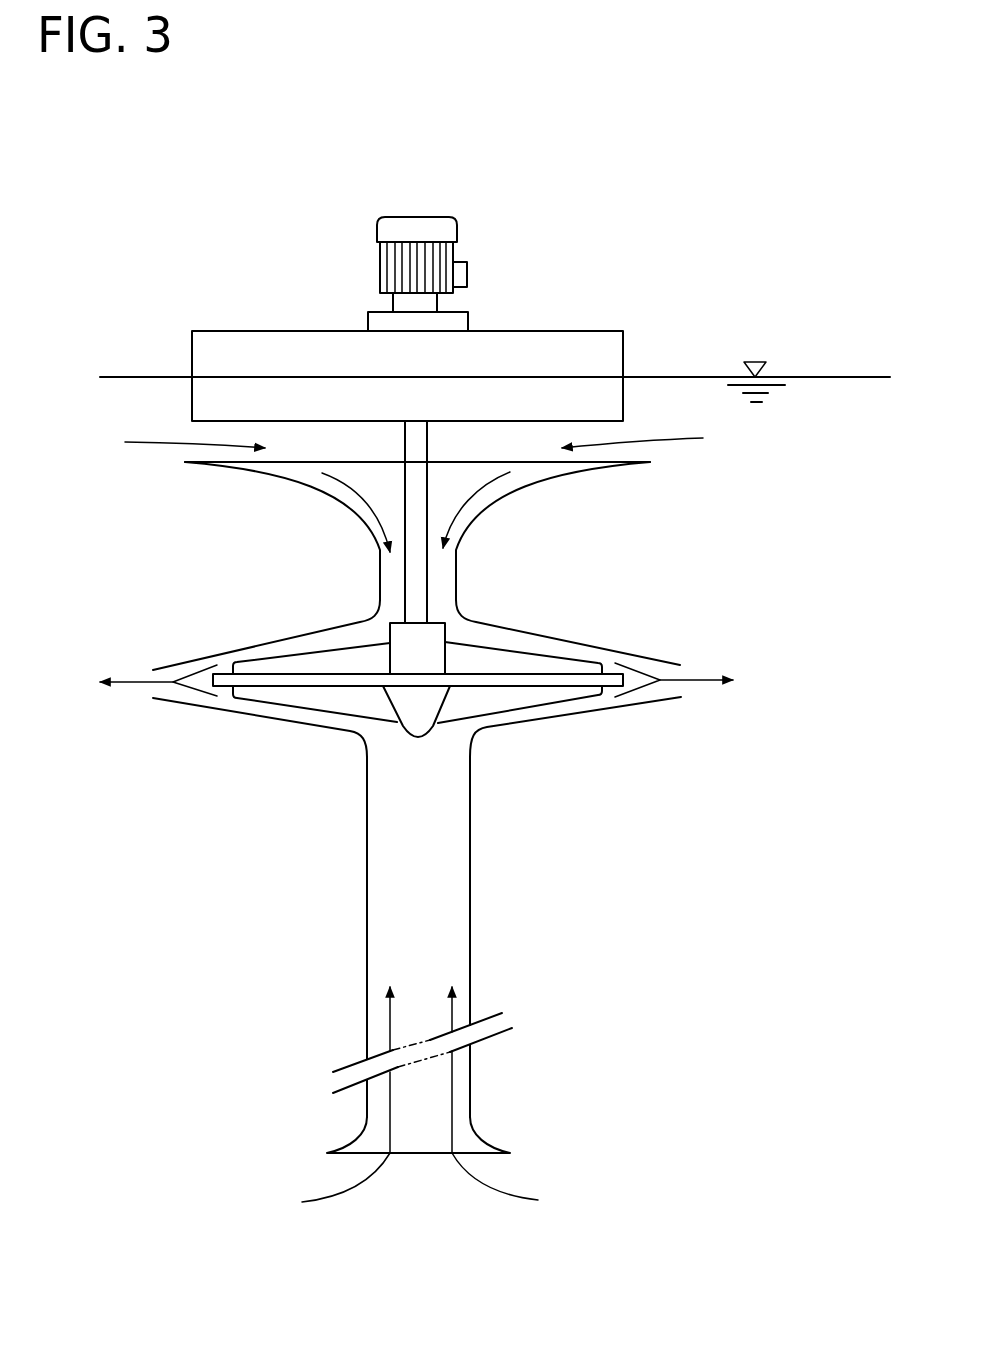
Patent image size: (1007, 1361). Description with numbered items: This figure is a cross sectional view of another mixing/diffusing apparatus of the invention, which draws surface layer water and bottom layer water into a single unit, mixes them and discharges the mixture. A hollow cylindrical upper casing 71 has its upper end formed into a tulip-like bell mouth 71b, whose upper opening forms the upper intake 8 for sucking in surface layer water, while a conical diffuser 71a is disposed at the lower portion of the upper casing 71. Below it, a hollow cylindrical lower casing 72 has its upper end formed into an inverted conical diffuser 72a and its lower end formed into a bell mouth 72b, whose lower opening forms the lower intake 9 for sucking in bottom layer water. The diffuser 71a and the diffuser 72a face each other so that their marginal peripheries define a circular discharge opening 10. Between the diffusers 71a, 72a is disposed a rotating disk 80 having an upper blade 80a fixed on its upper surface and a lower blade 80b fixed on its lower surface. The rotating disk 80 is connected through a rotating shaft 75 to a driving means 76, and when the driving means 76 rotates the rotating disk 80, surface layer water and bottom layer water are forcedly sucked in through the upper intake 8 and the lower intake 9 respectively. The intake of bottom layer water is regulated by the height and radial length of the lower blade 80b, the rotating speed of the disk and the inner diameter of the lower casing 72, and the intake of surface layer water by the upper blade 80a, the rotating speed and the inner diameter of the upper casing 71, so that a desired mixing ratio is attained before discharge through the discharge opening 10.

The upper intake 8 is at (543, 470).
The lower intake 9 is at (425, 1157).
The discharge opening 10 is at (682, 675).
The upper casing 71 is at (378, 585).
The conical diffuser 71a is at (573, 640).
The bell mouth 71b is at (235, 473).
The lower casing 72 is at (470, 898).
The inverted conical diffuser 72a is at (580, 720).
The bell mouth 72b is at (345, 1143).
The rotating shaft 75 is at (418, 583).
The driving means 76 is at (433, 214).
The rotating disk 80 is at (417, 703).
The upper blade 80a is at (290, 665).
The lower blade 80b is at (290, 697).